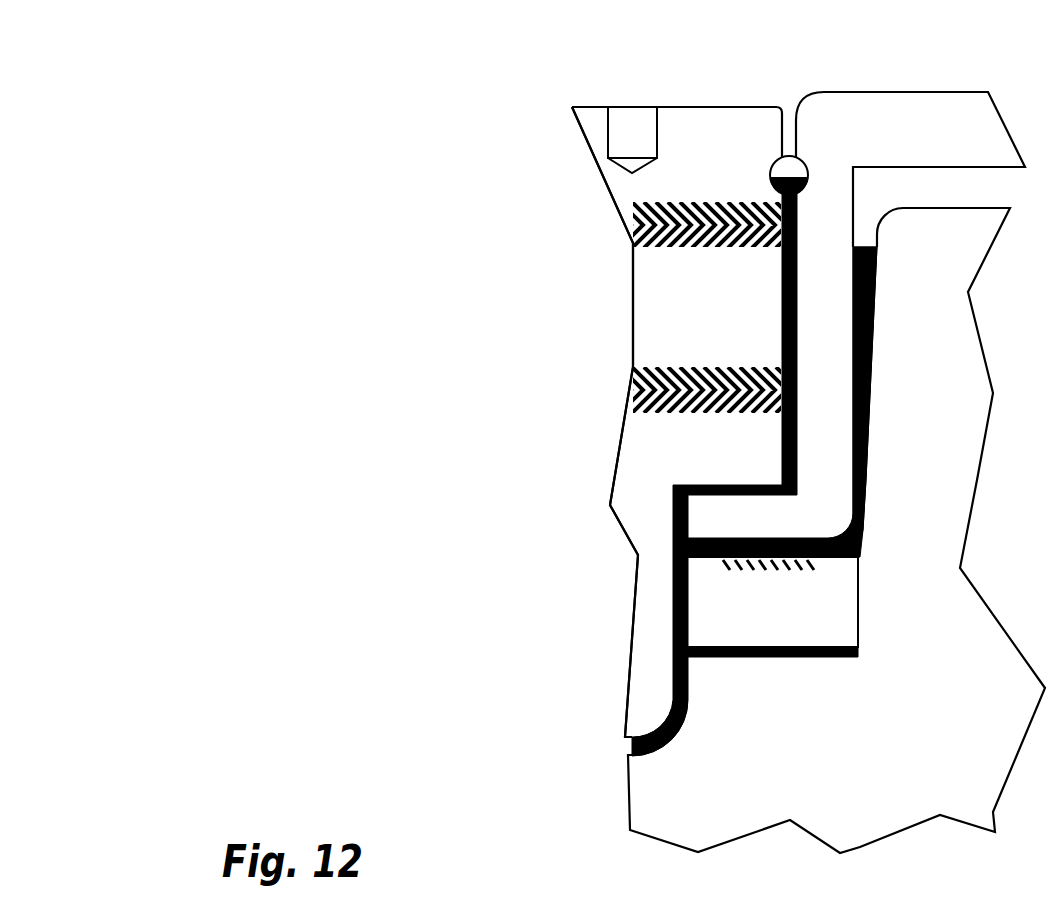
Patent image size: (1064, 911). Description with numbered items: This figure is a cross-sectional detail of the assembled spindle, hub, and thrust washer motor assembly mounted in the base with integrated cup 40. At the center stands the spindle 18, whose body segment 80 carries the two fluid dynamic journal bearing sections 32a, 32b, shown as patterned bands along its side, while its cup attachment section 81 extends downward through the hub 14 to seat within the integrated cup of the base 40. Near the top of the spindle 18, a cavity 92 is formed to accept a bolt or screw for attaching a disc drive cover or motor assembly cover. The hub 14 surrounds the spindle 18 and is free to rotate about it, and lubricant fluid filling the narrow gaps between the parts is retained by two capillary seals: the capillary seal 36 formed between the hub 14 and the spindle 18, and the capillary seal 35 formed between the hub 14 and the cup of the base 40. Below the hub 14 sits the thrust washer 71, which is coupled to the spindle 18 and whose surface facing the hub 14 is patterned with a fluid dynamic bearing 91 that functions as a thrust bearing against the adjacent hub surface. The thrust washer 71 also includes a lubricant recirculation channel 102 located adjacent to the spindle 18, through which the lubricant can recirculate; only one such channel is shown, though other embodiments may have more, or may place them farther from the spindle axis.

The hub 14 is at (857, 135).
The spindle 18 is at (597, 742).
The capillary seal 35 is at (852, 247).
The capillary seal 36 is at (789, 173).
The base with integrated cup 40 is at (860, 782).
The thrust washer 71 is at (805, 642).
The body segment 80 is at (550, 118).
The cup attachment section 81 is at (601, 494).
The fluid dynamic bearing 91 is at (817, 572).
The cavity 92 is at (643, 140).
The lubricant recirculation channel 102 is at (688, 630).
The fluid dynamic journal bearing section 32a is at (622, 252).
The fluid dynamic journal bearing section 32b is at (622, 370).